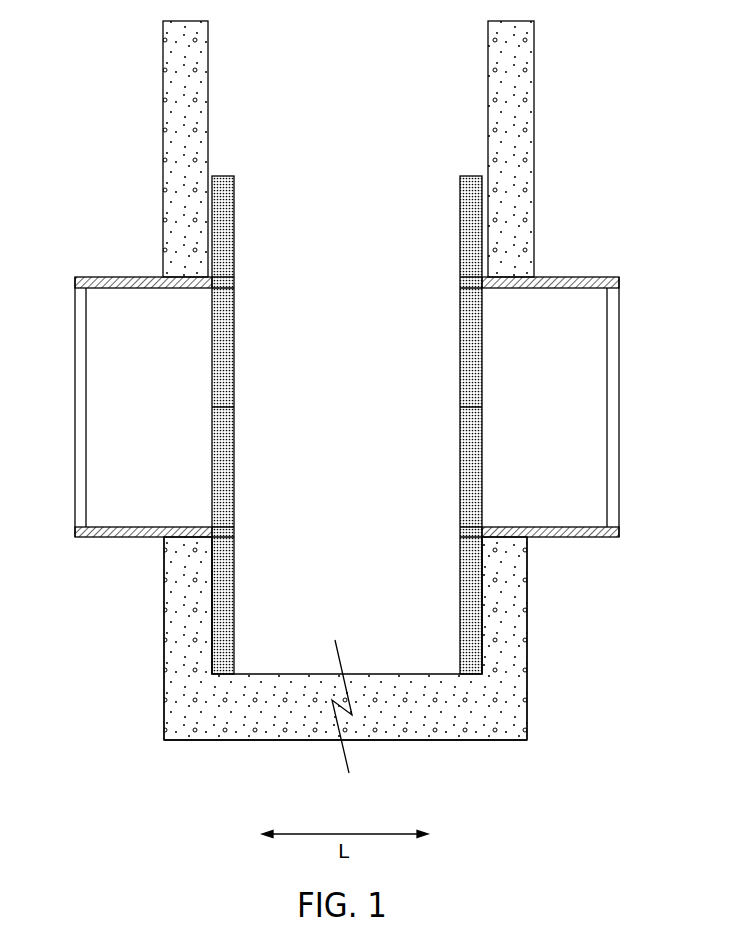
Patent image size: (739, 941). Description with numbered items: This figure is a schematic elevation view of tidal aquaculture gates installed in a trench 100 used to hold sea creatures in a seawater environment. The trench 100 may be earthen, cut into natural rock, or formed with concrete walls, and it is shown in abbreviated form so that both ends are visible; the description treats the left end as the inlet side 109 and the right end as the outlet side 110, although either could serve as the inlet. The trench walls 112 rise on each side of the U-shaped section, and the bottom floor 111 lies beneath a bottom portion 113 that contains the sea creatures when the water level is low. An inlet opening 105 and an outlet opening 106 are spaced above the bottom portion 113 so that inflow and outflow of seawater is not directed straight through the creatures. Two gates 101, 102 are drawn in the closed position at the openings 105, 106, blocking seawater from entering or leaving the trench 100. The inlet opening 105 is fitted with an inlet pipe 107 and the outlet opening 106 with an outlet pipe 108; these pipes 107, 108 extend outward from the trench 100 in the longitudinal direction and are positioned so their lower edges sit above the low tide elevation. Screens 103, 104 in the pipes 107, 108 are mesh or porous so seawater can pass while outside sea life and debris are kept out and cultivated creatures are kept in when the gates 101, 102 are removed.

The trench 100 is at (163, 44).
The gate 101 is at (226, 217).
The gate 102 is at (460, 255).
The screen 103 is at (80, 331).
The screen 104 is at (615, 332).
The inlet opening 105 is at (127, 467).
The outlet opening 106 is at (570, 463).
The inlet pipe 107 is at (120, 277).
The outlet pipe 108 is at (577, 277).
The inlet side 109 is at (110, 604).
The outlet side 110 is at (600, 604).
The bottom floor 111 is at (310, 674).
The trench wall 112 is at (210, 84).
The bottom portion 113 is at (411, 662).